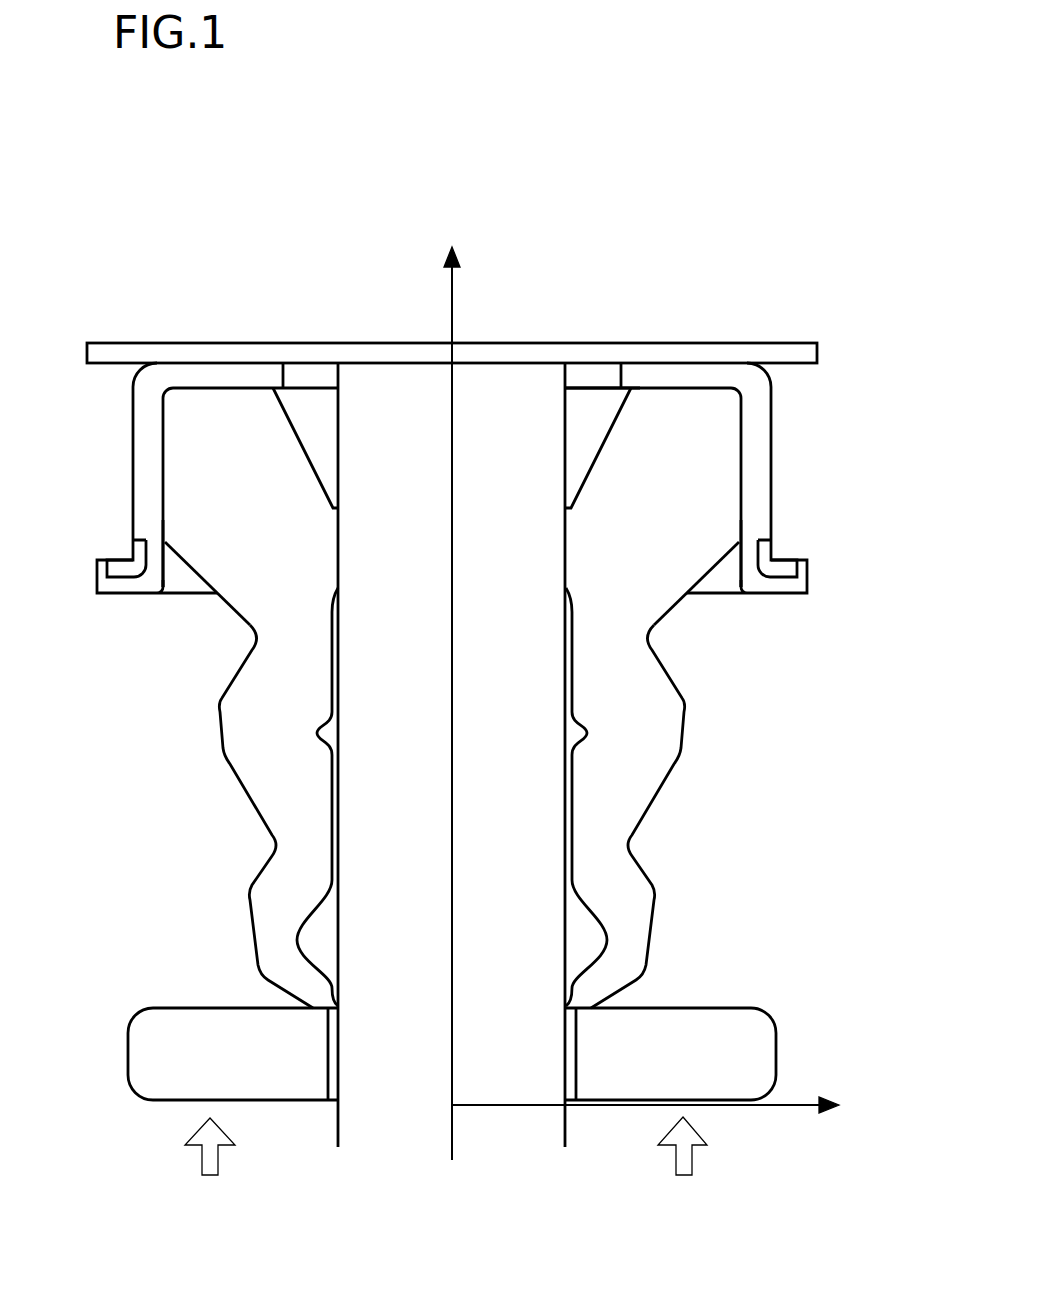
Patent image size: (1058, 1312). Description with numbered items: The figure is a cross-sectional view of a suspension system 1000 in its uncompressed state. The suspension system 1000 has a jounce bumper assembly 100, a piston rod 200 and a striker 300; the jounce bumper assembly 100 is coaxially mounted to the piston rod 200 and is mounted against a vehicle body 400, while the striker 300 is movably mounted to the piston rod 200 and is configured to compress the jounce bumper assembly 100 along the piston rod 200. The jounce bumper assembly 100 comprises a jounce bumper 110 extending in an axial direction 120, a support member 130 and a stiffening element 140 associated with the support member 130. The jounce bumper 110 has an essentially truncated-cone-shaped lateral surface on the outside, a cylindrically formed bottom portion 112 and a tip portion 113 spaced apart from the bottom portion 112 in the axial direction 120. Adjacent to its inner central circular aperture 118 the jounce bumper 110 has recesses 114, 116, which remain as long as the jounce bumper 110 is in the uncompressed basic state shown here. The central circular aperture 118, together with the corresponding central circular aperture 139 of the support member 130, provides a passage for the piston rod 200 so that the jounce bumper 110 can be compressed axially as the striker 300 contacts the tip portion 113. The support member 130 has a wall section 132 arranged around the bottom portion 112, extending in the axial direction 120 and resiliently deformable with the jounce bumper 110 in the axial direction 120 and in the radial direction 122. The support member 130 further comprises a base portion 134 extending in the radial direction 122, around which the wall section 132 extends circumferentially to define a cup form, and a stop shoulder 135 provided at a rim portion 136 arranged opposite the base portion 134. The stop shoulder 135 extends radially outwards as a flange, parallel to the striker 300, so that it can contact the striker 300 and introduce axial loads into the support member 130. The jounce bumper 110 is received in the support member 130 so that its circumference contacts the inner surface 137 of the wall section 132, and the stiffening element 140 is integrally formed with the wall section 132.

The suspension system 1000 is at (190, 286).
The jounce bumper assembly 100 is at (150, 692).
The jounce bumper 110 is at (301, 890).
The bottom portion 112 is at (210, 478).
The tip portion 113 is at (625, 937).
The recess 114 is at (582, 947).
The recess 116 is at (318, 420).
The central circular aperture 118 is at (567, 543).
The axial direction 120 is at (453, 293).
The radial direction 122 is at (770, 1112).
The support member 130 is at (775, 487).
The wall section 132 is at (775, 438).
The base portion 134 is at (735, 377).
The stop shoulder 135 is at (807, 593).
The rim portion 136 is at (760, 583).
The inner surface 137 is at (742, 527).
The central circular aperture 139 is at (627, 388).
The stiffening element 140 is at (783, 573).
The piston rod 200 is at (522, 834).
The striker 300 is at (745, 1007).
The vehicle body 400 is at (733, 345).